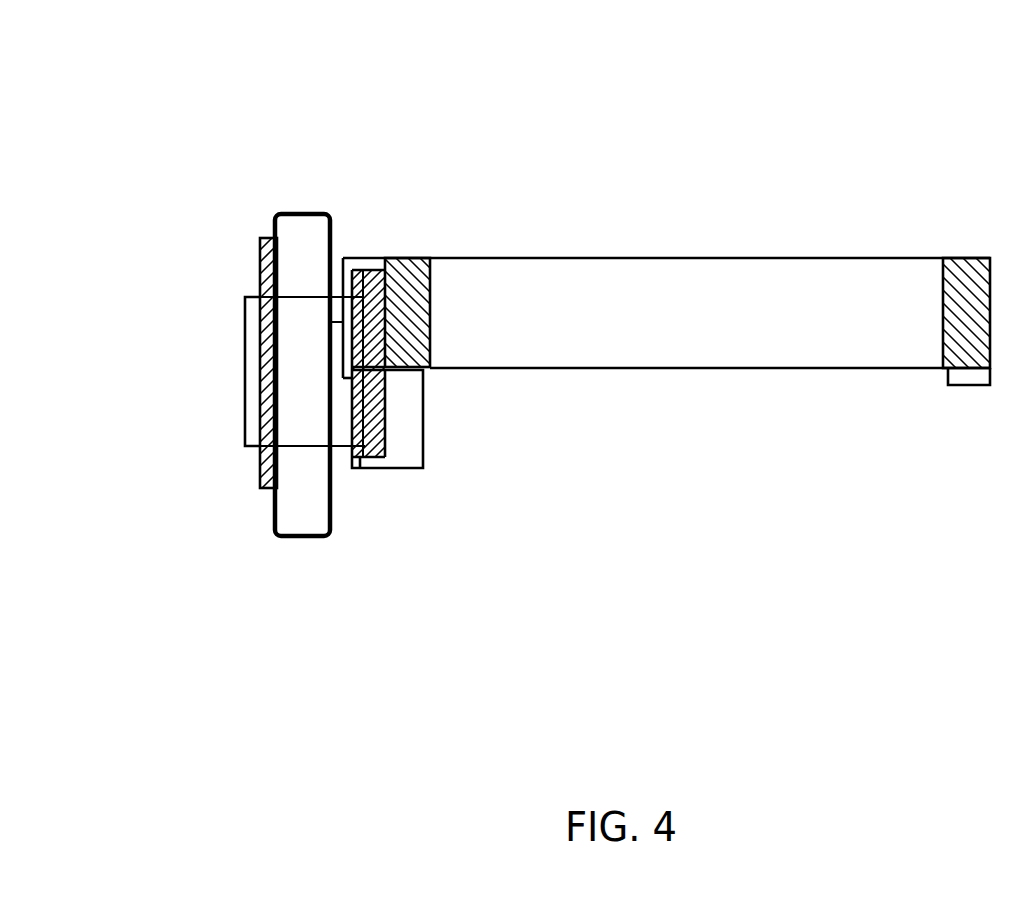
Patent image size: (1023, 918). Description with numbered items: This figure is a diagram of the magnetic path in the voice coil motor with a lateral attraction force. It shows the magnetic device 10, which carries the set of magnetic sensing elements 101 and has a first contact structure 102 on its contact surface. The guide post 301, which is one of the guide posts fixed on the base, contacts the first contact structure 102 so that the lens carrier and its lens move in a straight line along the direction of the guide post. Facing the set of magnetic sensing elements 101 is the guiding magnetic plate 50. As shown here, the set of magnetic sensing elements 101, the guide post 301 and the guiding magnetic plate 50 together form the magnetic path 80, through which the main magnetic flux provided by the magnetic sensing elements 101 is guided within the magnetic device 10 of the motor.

The magnetic device 10 is at (412, 262).
The set of magnetic sensing elements 101 is at (373, 415).
The first contact structure 102 is at (336, 322).
The magnetic path 80 is at (243, 355).
The guiding magnetic plate 50 is at (255, 467).
The guide post 301 is at (300, 497).